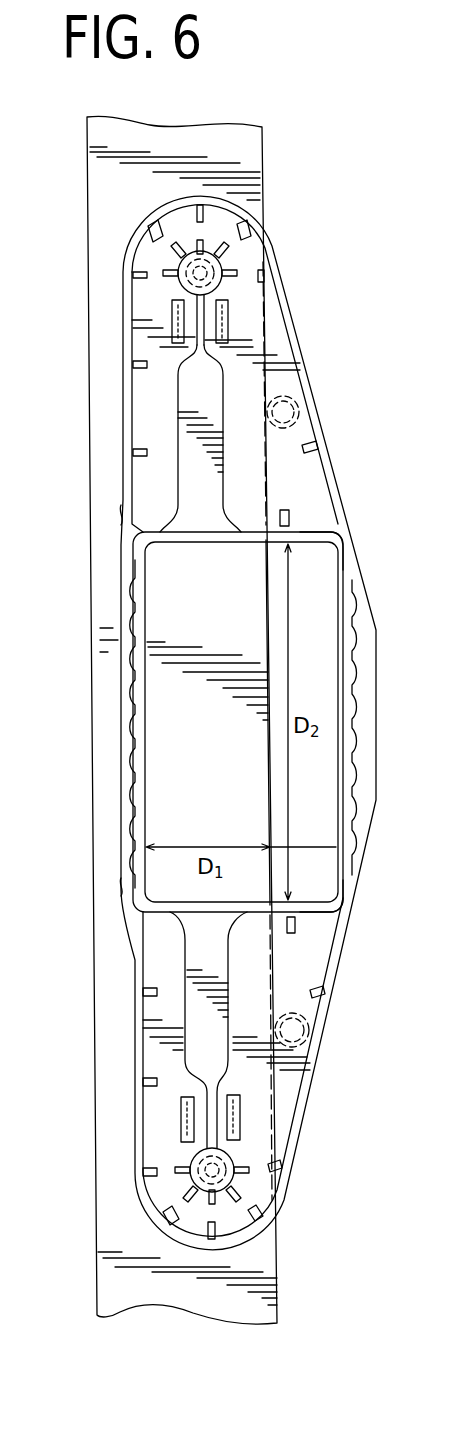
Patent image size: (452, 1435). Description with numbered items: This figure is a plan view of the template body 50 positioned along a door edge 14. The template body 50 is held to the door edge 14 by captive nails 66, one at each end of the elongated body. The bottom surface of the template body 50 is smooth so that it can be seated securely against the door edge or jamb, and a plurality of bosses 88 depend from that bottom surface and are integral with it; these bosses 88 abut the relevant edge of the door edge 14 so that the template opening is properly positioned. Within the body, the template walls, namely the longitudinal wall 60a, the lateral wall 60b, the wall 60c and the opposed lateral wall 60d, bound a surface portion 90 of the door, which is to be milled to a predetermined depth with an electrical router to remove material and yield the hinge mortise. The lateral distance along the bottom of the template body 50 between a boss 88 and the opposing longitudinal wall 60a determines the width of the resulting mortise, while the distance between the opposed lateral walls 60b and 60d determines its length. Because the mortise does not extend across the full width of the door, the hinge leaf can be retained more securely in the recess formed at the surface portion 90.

The door edge 14 is at (102, 262).
The template body 50 is at (363, 983).
The longitudinal wall 60a is at (133, 738).
The lateral wall 60b is at (320, 523).
The template wall 60c is at (350, 702).
The lateral wall 60d is at (325, 907).
The captive nail 66 is at (213, 272).
The boss 88 is at (290, 408).
The surface portion 90 is at (221, 760).